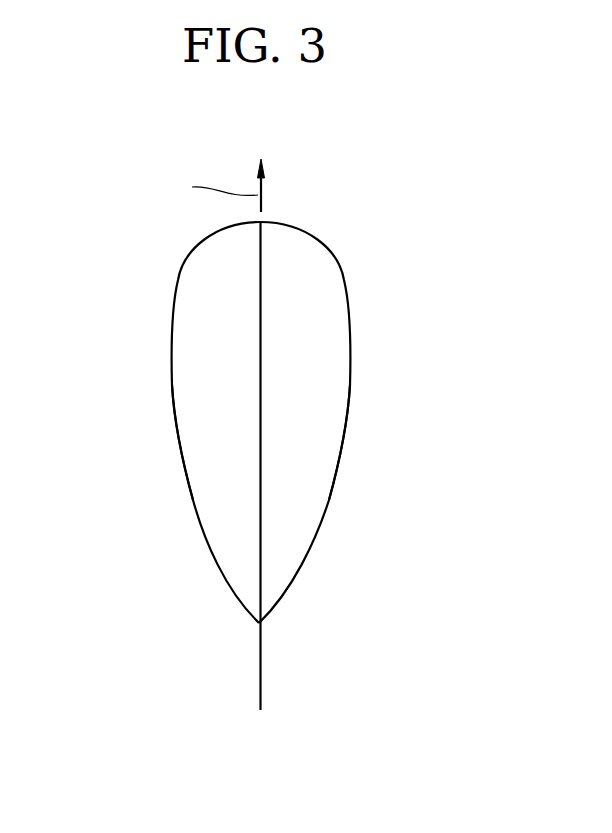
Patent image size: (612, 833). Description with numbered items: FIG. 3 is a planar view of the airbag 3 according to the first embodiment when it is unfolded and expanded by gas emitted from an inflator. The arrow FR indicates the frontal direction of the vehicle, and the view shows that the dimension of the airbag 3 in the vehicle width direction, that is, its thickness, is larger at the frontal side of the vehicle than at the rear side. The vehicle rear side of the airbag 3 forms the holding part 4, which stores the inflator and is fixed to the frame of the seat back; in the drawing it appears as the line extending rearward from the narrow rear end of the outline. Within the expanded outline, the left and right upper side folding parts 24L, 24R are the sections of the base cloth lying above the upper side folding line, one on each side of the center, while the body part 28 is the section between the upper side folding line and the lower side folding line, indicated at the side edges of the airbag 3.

The airbag 3 is at (276, 433).
The left upper side folding part 24L is at (203, 330).
The right upper side folding part 24R is at (317, 325).
The body part 28 is at (177, 427).
The holding part 4 is at (260, 668).